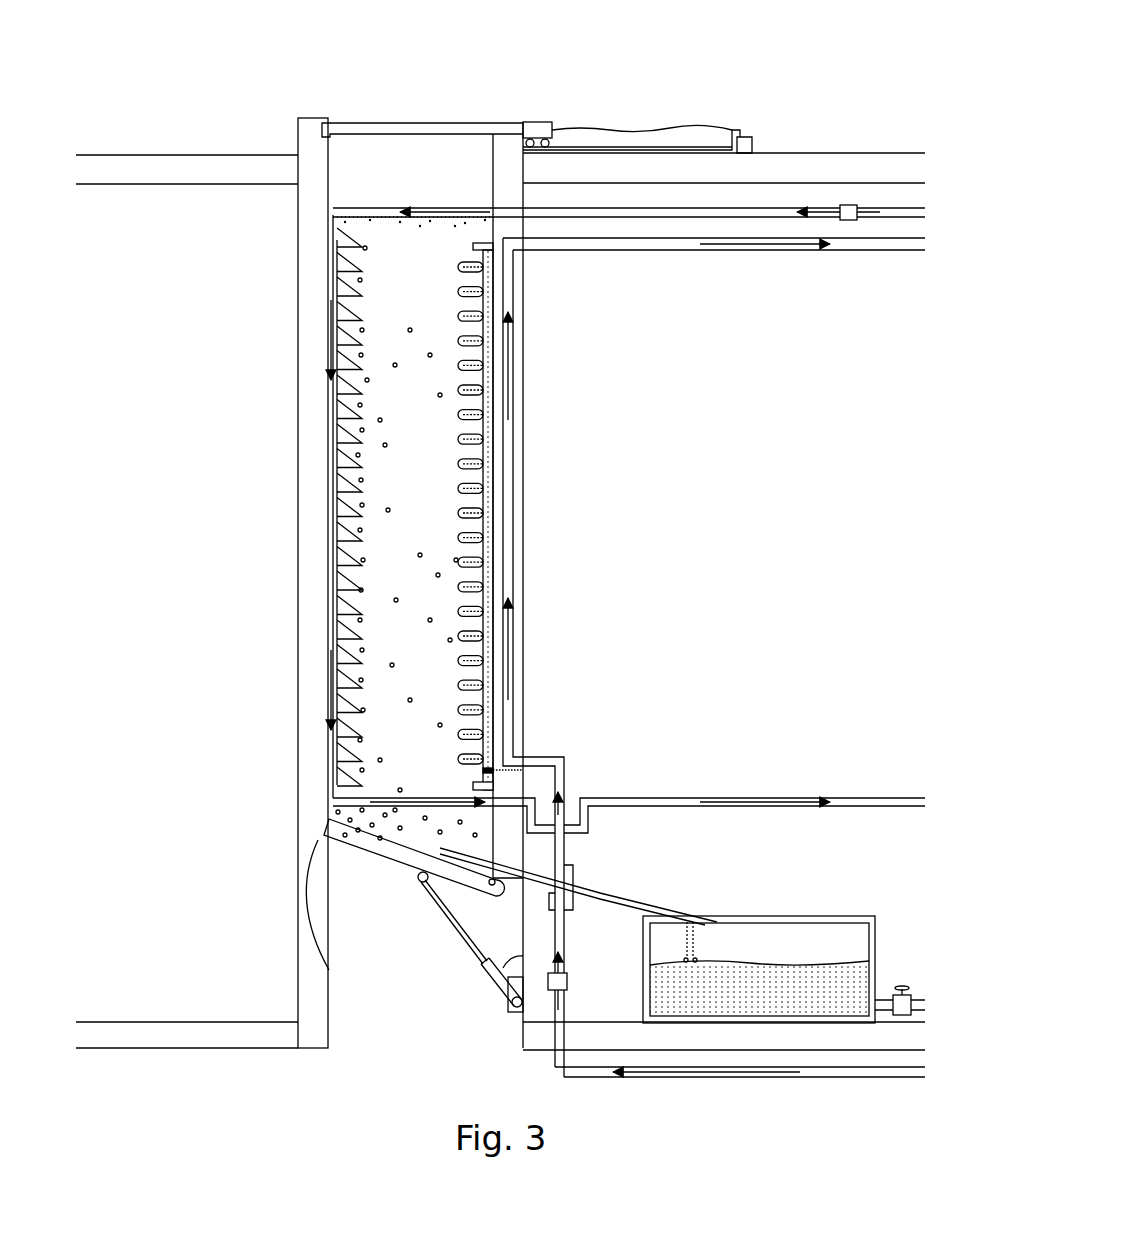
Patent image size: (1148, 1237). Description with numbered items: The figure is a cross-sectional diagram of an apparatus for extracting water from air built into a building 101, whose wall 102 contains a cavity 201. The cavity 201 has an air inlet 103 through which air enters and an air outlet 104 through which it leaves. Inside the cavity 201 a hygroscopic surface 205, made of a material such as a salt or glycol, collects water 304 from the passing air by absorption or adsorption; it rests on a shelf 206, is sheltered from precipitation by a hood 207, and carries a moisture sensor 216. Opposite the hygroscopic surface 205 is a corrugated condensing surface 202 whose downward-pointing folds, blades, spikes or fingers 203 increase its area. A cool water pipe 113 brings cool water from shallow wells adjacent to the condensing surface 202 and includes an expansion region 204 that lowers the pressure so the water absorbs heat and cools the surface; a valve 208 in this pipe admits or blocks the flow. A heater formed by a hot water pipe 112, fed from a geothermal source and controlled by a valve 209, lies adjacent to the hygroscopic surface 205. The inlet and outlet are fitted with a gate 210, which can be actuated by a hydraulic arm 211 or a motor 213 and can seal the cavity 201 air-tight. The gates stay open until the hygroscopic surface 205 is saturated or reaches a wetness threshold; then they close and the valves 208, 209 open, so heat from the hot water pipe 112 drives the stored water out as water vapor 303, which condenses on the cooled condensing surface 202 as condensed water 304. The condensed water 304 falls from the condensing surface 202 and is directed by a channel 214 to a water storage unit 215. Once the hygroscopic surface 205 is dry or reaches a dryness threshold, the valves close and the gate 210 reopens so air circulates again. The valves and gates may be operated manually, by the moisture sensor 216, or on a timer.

The building 101 is at (716, 40).
The wall 102 is at (300, 272).
The air inlet 103 is at (332, 870).
The air outlet 104 is at (362, 112).
The hot water pipe 112 is at (580, 252).
The cool water pipe 113 is at (570, 208).
The cavity 201 is at (372, 547).
The condensing surface 202 is at (383, 302).
The folds, blades, spikes or fingers 203 is at (345, 258).
The expansion region 204 is at (333, 342).
The hygroscopic surface 205 is at (458, 468).
The shelf 206 is at (472, 787).
The hood 207 is at (478, 250).
The valve 208 is at (847, 205).
The valve 209 is at (568, 982).
The gate 210 is at (433, 128).
The hydraulic arm 211 is at (470, 978).
The motor 213 is at (600, 118).
The channel 214 is at (600, 888).
The water storage unit 215 is at (810, 937).
The moisture sensor 216 is at (470, 768).
The water vapor 303 is at (443, 521).
The condensed water 304 is at (395, 665).